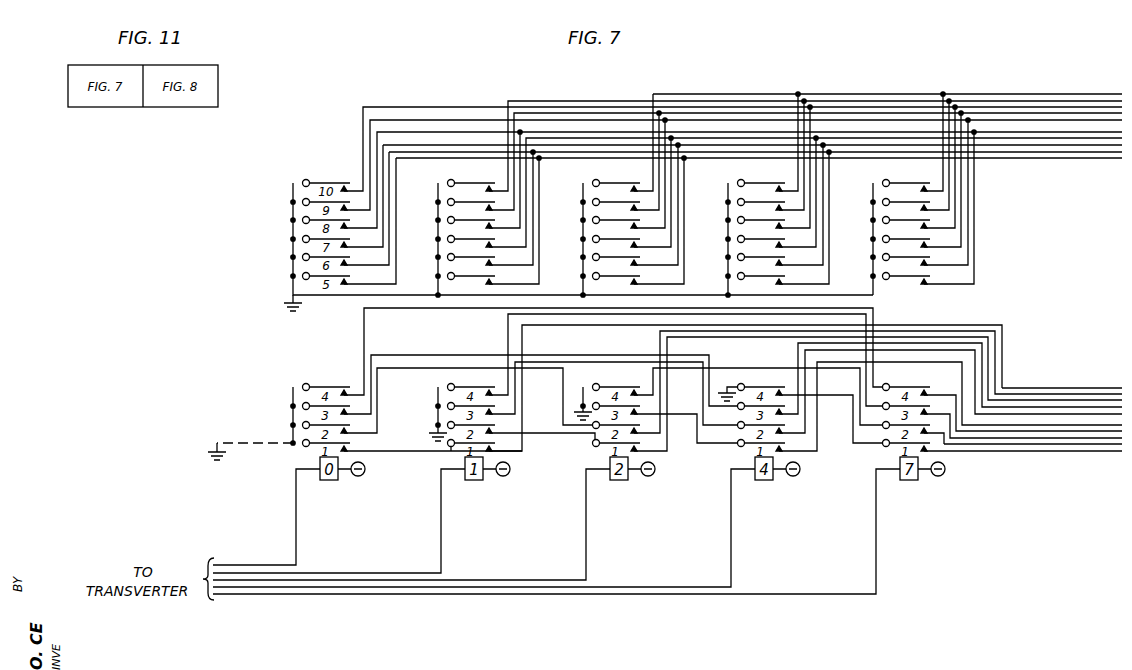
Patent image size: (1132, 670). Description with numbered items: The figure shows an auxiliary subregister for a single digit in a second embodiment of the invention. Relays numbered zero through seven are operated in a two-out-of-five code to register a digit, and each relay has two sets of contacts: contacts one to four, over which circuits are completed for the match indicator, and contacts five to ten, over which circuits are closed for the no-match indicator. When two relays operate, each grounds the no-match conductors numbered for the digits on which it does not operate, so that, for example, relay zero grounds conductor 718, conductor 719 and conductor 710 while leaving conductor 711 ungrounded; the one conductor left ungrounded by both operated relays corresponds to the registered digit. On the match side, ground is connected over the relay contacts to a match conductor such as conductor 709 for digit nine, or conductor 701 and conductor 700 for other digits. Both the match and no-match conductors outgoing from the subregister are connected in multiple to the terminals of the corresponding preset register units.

The conductor 711 is at (1032, 94).
The conductor 710 is at (1019, 159).
The conductor 719 is at (1048, 153).
The conductor 718 is at (1083, 146).
The conductor 701 is at (1060, 388).
The conductor 709 is at (1010, 446).
The conductor 700 is at (1066, 452).